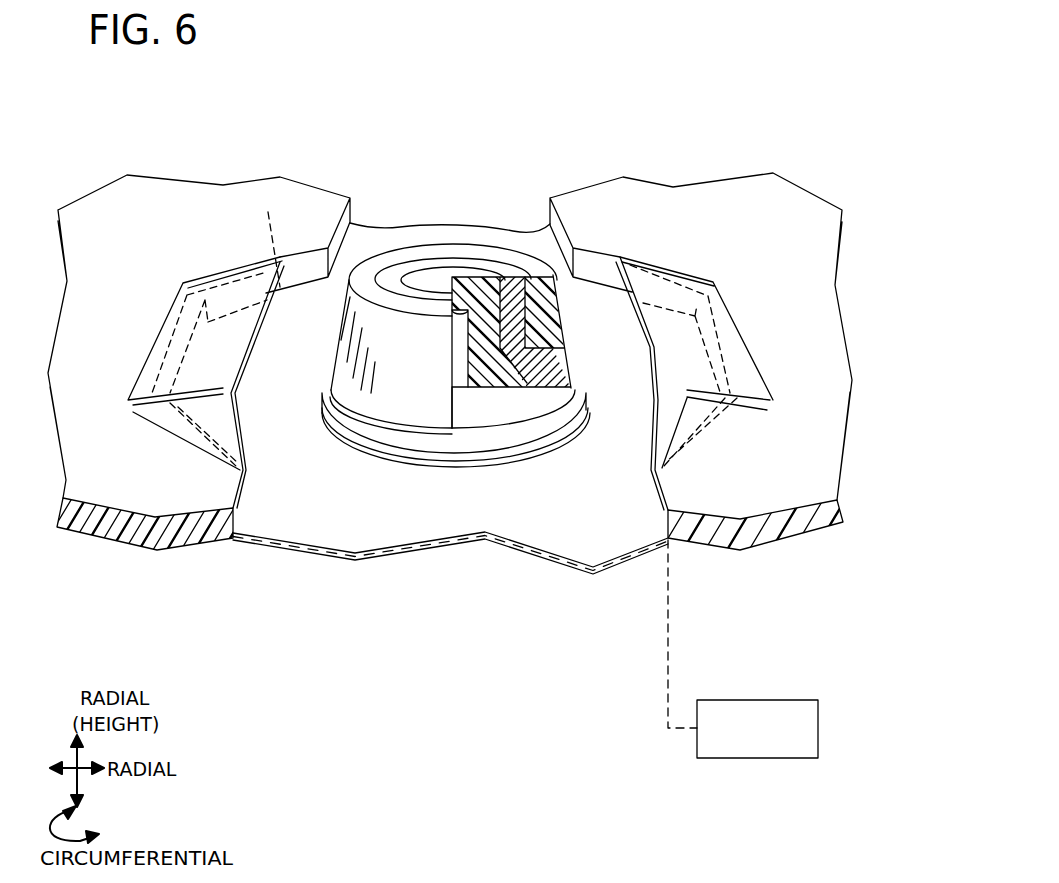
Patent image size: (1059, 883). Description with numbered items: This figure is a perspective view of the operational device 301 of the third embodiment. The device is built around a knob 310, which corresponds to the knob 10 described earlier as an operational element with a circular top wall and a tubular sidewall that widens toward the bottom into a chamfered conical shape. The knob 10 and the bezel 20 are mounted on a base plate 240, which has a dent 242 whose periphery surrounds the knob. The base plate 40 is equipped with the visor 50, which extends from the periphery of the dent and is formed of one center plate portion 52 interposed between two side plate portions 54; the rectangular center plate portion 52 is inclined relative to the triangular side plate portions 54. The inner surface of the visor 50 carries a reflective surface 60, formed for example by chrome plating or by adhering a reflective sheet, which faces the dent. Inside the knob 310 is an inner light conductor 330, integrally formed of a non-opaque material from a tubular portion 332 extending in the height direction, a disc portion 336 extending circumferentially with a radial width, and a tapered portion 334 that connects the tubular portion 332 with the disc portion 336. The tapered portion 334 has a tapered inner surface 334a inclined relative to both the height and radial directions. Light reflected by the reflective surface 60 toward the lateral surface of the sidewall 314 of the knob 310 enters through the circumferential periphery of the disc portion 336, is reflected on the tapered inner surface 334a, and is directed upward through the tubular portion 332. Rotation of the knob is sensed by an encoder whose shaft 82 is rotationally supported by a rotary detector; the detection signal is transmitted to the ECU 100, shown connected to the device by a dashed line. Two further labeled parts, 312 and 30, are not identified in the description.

The operational device 301 is at (569, 92).
The base plate 240 is at (661, 158).
The dent 242 is at (659, 312).
The visor 50 is at (740, 264).
The reflective surface 60 is at (268, 212).
The side plate portion 54 is at (222, 270).
The center plate portion 52 is at (198, 347).
The knob 310 is at (454, 232).
The annular groove 312 is at (410, 255).
The sidewall 314 is at (347, 357).
The tubular portion 332 is at (530, 322).
The tapered portion 334 is at (518, 370).
The tapered inner surface 334a is at (515, 373).
The disc portion 336 is at (561, 405).
The inner light conductor 330 is at (527, 403).
The bezel 20 is at (566, 453).
The shaft 82 is at (425, 460).
The base plate 40 is at (308, 350).
The flange ring 30 is at (451, 442).
The knob 10 is at (465, 475).
The ECU 100 is at (771, 758).